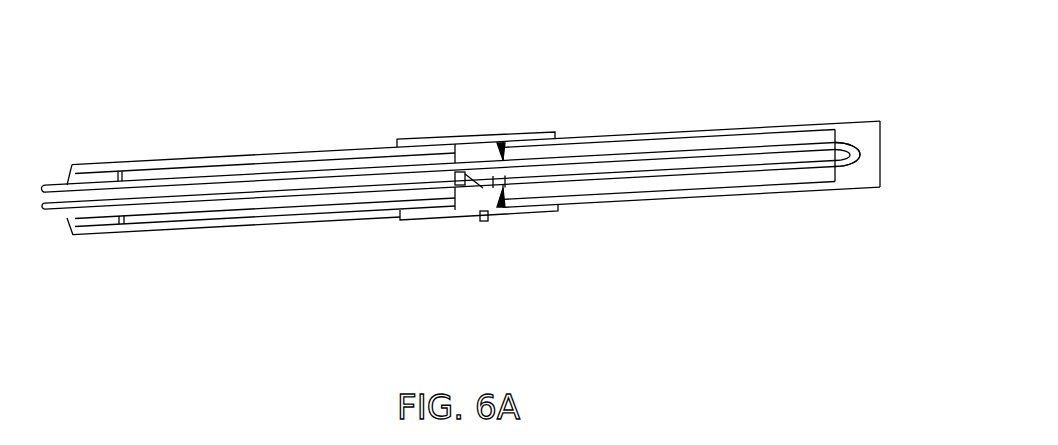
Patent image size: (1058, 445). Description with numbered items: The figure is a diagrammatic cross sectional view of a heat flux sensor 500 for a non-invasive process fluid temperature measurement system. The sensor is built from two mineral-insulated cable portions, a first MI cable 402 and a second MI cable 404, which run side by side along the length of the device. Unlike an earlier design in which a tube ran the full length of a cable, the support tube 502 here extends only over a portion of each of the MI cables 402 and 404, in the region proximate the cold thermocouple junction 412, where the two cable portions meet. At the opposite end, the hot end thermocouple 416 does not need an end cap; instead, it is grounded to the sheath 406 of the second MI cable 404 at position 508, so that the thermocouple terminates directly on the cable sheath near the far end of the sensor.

The heat flux sensor 500 is at (540, 94).
The support tube 502 is at (481, 133).
The first MI cable portion 402 is at (231, 244).
The second MI cable 404 is at (710, 212).
The sheath 406 is at (753, 128).
The cold thermocouple junction 412 is at (483, 188).
The hot end thermocouple 416 is at (857, 177).
The grounding position 508 is at (863, 143).